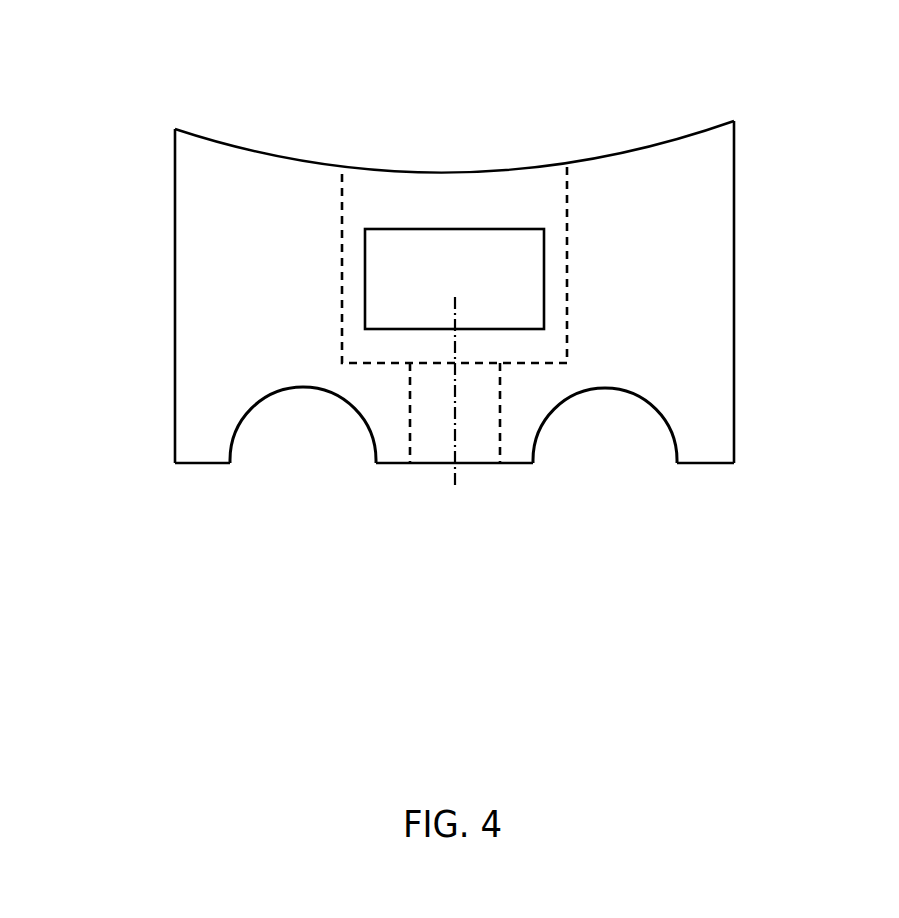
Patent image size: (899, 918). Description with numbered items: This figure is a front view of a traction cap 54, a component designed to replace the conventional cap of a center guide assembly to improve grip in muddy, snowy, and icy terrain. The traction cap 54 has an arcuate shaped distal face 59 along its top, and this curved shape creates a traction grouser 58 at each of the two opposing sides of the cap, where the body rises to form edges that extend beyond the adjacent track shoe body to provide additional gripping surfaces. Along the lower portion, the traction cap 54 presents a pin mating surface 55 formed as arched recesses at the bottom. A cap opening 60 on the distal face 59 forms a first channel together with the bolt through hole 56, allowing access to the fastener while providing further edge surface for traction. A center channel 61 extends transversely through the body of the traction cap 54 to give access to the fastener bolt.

The traction cap 54 is at (219, 96).
The pin mating surface 55 is at (288, 398).
The bolt through hole 56 is at (455, 470).
The traction grousers 58 is at (175, 147).
The arcuate shaped distal face 59 is at (567, 162).
The cap opening 60 is at (410, 171).
The center channel 61 is at (534, 263).